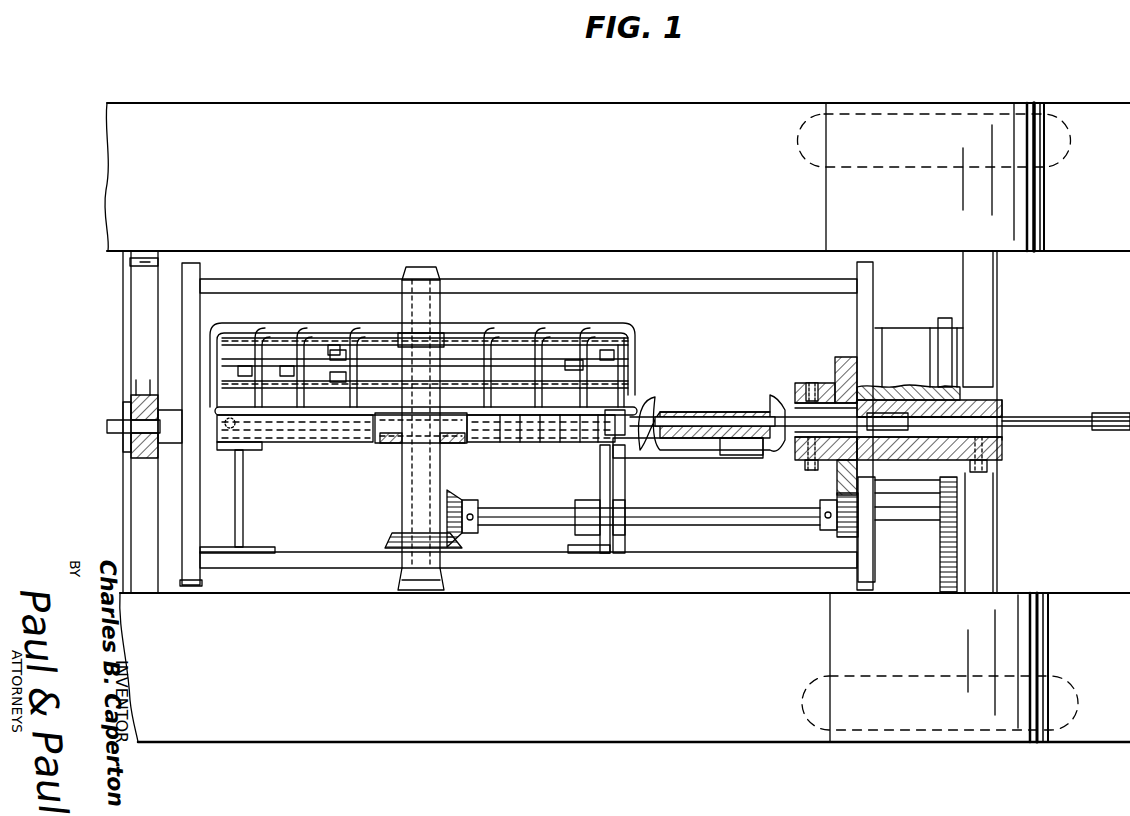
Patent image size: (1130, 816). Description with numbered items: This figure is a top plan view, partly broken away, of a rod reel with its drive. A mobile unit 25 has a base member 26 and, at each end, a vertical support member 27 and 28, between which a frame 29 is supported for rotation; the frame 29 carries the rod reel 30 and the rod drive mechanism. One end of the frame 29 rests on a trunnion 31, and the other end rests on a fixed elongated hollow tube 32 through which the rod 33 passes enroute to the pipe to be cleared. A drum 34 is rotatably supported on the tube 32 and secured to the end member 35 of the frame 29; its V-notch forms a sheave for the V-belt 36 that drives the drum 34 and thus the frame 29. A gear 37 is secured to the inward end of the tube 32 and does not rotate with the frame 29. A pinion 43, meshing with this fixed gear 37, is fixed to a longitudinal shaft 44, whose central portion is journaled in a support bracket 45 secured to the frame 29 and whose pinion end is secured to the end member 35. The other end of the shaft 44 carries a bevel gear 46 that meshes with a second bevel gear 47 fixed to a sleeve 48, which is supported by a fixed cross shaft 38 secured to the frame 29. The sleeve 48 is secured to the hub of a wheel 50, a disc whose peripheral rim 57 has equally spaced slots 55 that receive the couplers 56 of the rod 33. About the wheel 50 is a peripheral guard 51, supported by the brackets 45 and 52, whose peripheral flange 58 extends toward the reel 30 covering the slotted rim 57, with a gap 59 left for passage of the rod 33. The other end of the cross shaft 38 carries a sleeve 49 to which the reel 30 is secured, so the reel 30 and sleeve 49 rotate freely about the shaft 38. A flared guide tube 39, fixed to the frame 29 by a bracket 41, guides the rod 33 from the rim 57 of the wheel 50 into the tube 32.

The mobile unit 25 is at (338, 100).
The base member 26 is at (520, 110).
The vertical support member 27 is at (145, 572).
The vertical support member 28 is at (975, 385).
The frame 29 is at (326, 568).
The rod reel 30 is at (645, 357).
The trunnion 31 is at (107, 426).
The tube 32 is at (985, 419).
The rod 33 is at (522, 370).
The drum 34 is at (903, 340).
The end member 35 is at (857, 306).
The V-belt 36 is at (947, 548).
The gear 37 is at (838, 375).
The cross shaft 38 is at (420, 470).
The flared guide tube 39 is at (700, 412).
The bracket 41 is at (700, 458).
The pinion 43 is at (848, 537).
The longitudinal shaft 44 is at (655, 524).
The support bracket 45 is at (600, 490).
The bevel gear 46 is at (455, 492).
The bevel gear 47 is at (425, 540).
The sleeve 48 is at (400, 505).
The sleeve 49 is at (441, 305).
The wheel 50 is at (448, 440).
The peripheral guard 51 is at (305, 432).
The bracket 52 is at (240, 505).
The slots 55 is at (470, 428).
The couplers 56 is at (341, 375).
The peripheral rim 57 is at (395, 440).
The peripheral flange 58 is at (275, 432).
The gap 59 is at (625, 460).